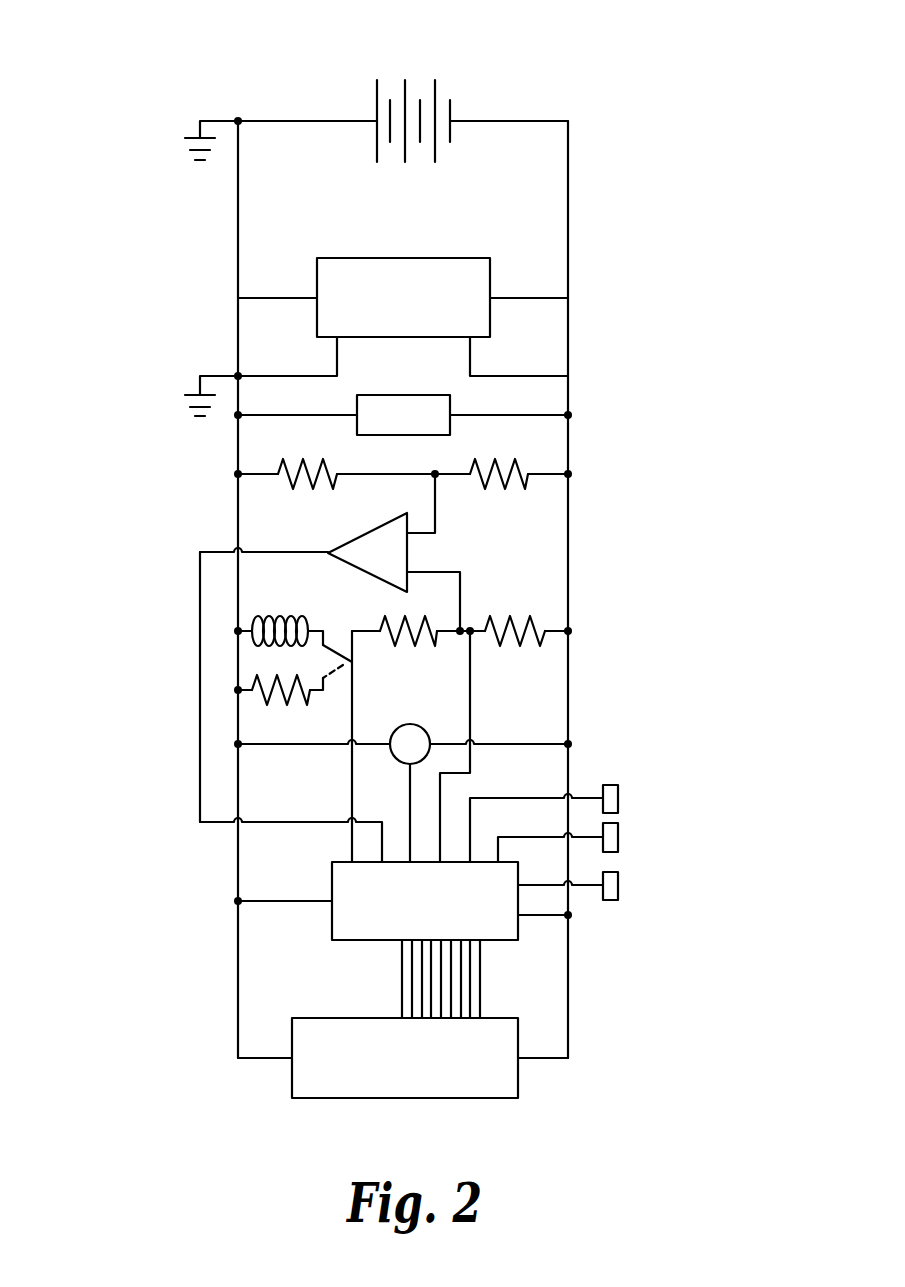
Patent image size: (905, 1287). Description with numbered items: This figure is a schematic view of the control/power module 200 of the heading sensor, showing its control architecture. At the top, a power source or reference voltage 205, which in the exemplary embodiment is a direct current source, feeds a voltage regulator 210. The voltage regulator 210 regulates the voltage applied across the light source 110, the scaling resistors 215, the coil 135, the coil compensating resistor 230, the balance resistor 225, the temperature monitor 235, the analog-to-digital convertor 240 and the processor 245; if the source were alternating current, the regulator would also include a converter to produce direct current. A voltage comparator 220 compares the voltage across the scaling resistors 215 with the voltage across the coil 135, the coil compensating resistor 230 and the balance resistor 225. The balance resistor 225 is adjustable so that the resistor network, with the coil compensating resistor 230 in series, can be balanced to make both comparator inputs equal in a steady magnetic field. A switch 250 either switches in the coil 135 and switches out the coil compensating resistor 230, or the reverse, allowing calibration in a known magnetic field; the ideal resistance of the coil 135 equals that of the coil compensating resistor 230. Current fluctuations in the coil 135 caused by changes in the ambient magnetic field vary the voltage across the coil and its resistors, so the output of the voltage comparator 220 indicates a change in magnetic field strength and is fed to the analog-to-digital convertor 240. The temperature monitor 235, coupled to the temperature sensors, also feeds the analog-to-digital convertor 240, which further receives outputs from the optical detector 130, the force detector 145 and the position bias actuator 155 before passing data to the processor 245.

The control/power module 200 is at (118, 68).
The power source or reference voltage 205 is at (445, 82).
The voltage regulator 210 is at (490, 317).
The light source 110 is at (430, 405).
The scaling resistors 215 is at (530, 620).
The voltage comparator 220 is at (362, 547).
The coil 135 is at (272, 618).
The coil compensating resistor 230 is at (277, 700).
The balance resistor 225 is at (410, 647).
The switch 250 is at (343, 662).
The temperature monitor 235 is at (413, 748).
The optical detector 130 is at (618, 799).
The force detector 145 is at (618, 837).
The position bias actuator 155 is at (618, 885).
The analog-to-digital convertor 240 is at (508, 930).
The processor 245 is at (508, 1082).